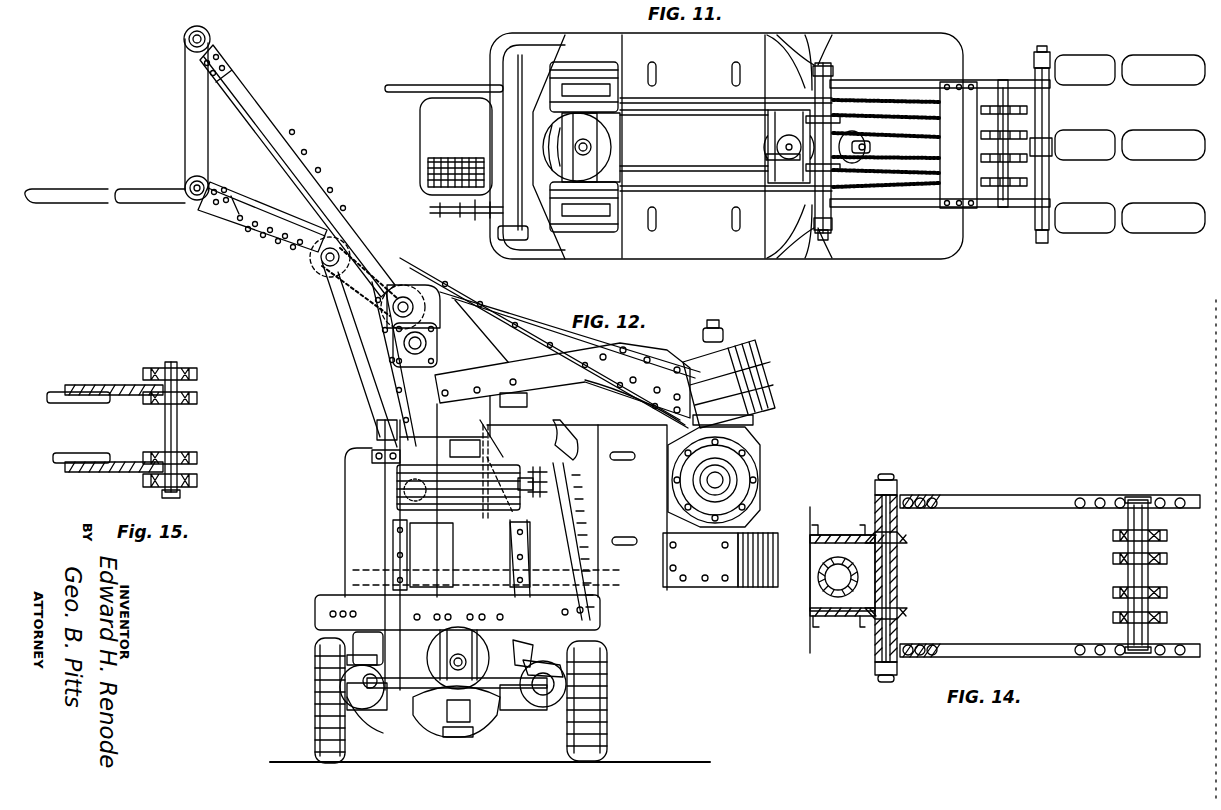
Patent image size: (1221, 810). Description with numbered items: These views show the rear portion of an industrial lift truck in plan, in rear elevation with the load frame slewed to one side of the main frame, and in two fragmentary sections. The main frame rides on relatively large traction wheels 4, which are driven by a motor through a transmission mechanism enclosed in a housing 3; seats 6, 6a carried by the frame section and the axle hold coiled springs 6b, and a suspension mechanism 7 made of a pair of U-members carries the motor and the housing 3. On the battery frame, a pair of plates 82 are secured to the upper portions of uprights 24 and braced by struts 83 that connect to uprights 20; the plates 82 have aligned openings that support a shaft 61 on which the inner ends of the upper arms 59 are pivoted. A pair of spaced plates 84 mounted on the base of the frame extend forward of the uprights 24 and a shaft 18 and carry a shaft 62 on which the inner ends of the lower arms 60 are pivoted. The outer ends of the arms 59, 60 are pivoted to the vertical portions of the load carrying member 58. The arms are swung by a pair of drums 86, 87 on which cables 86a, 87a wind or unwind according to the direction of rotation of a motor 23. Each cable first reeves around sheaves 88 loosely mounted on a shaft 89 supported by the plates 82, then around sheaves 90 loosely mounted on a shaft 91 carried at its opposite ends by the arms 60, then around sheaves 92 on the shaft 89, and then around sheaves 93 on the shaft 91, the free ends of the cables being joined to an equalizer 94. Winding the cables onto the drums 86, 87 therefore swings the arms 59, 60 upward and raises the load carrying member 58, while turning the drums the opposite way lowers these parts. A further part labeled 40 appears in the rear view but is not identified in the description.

In FIG. 12, the housing 3 is at (446, 722).
In FIG. 12, the wheels 4 is at (320, 720).
In FIG. 12, the seat 6 is at (355, 647).
In FIG. 12, the seat 6a is at (347, 677).
In FIG. 12, the coiled springs 6b is at (347, 660).
In FIG. 12, the suspension mechanism 7 is at (490, 727).
In FIG. 14, the shaft 18 is at (822, 590).
In FIG. 11, the uprights 20 is at (618, 128).
In FIG. 12, the uprights 20 is at (672, 430).
In FIG. 11, the motor 23 is at (535, 137).
In FIG. 12, the motor 23 is at (757, 388).
In FIG. 14, the uprights 24 is at (832, 535).
In FIG. 12, the lever 40 is at (558, 740).
In FIG. 11, the load carrying member 58 is at (1130, 144).
In FIG. 12, the load carrying member 58 is at (117, 114).
In FIG. 11, the upper arms 59 is at (991, 80).
In FIG. 12, the upper arms 59 is at (260, 110).
In FIG. 15, the upper arms 59 is at (93, 453).
In FIG. 12, the lower arms 60 is at (267, 217).
In FIG. 14, the lower arms 60 is at (1030, 495).
In FIG. 12, the shaft 61 is at (430, 343).
In FIG. 12, the shaft 62 is at (390, 500).
In FIG. 14, the shaft 62 is at (890, 583).
In FIG. 11, the plates 82 is at (777, 110).
In FIG. 12, the plates 82 is at (466, 300).
In FIG. 15, the plates 82 is at (117, 385).
In FIG. 11, the struts 83 is at (707, 120).
In FIG. 12, the struts 83 is at (530, 320).
In FIG. 14, the spaced plates 84 is at (907, 543).
In FIG. 11, the drum 86 is at (600, 215).
In FIG. 11, the cable 86a is at (693, 196).
In FIG. 11, the drum 87 is at (627, 76).
In FIG. 12, the drum 87 is at (762, 468).
In FIG. 11, the cable 87a is at (707, 98).
In FIG. 12, the cable 87a is at (630, 393).
In FIG. 11, the sheaves 88 is at (848, 188).
In FIG. 12, the sheaves 88 is at (420, 285).
In FIG. 15, the sheaves 88 is at (198, 368).
In FIG. 11, the shaft 89 is at (806, 237).
In FIG. 12, the shaft 89 is at (393, 313).
In FIG. 15, the shaft 89 is at (178, 431).
In FIG. 11, the sheaves 90 is at (1028, 112).
In FIG. 12, the sheaves 90 is at (333, 237).
In FIG. 14, the sheaves 90 is at (1167, 535).
In FIG. 11, the shaft 91 is at (998, 193).
In FIG. 12, the shaft 91 is at (327, 265).
In FIG. 14, the shaft 91 is at (1150, 573).
In FIG. 11, the sheaves 92 is at (766, 157).
In FIG. 15, the sheaves 92 is at (198, 396).
In FIG. 11, the sheaves 93 is at (1028, 134).
In FIG. 14, the sheaves 93 is at (1167, 558).
In FIG. 11, the equalizer 94 is at (858, 135).